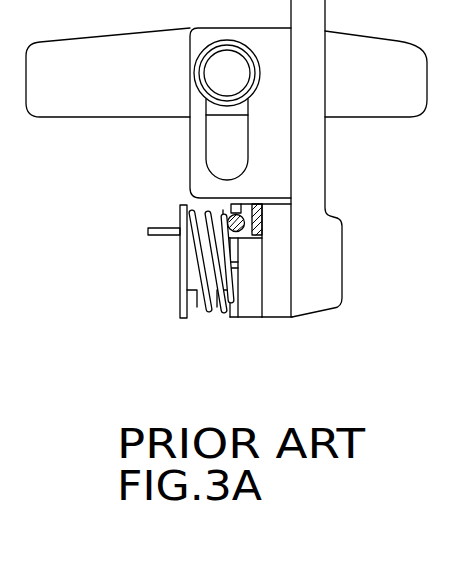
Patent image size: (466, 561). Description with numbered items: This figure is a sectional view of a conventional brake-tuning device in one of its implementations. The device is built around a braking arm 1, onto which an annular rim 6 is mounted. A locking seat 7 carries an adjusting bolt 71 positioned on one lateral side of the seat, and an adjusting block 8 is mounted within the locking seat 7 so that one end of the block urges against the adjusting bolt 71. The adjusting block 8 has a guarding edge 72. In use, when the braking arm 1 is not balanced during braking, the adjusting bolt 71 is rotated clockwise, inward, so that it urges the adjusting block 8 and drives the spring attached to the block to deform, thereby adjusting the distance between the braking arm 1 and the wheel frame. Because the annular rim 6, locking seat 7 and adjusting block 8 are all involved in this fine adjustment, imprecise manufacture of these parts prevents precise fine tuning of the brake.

The braking arm 1 is at (325, 158).
The annular rim 6 is at (278, 308).
The locking seat 7 is at (252, 308).
The adjusting bolt 71 is at (228, 220).
The guarding edge 72 is at (255, 198).
The adjusting block 8 is at (232, 318).